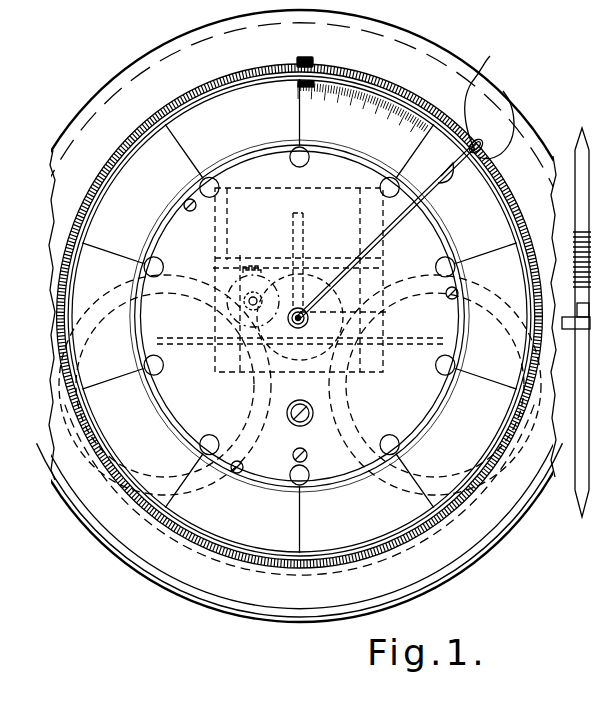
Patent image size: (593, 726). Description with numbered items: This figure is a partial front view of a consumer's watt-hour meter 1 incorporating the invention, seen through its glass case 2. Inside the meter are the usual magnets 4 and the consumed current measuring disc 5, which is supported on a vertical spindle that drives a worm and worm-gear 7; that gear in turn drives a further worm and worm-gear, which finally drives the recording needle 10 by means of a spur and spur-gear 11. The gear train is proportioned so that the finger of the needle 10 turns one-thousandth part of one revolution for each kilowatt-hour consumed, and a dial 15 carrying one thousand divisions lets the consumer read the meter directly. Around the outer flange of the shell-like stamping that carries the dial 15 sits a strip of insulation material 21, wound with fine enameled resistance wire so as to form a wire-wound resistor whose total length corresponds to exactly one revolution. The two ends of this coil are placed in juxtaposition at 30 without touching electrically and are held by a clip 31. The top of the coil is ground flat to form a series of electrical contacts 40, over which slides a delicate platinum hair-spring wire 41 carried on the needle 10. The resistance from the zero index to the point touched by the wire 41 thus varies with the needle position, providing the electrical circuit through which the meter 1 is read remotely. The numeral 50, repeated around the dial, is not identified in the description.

The meter 1 is at (83, 574).
The glass case 2 is at (500, 90).
The magnets 4 is at (503, 523).
The consumed current measuring disc 5 is at (477, 502).
The worm and worm-gear 7 is at (290, 232).
The recording needle 10 is at (397, 227).
The spur and spur-gear 11 is at (225, 310).
The dial 15 is at (330, 75).
The strip of insulation material 21 is at (417, 540).
The juxtaposed ends of the coil 30 is at (303, 56).
The clip 31 is at (314, 76).
The series of electrical contacts 40 is at (480, 142).
The hair-spring wire 41 is at (493, 53).
The spokes 50 is at (225, 97).